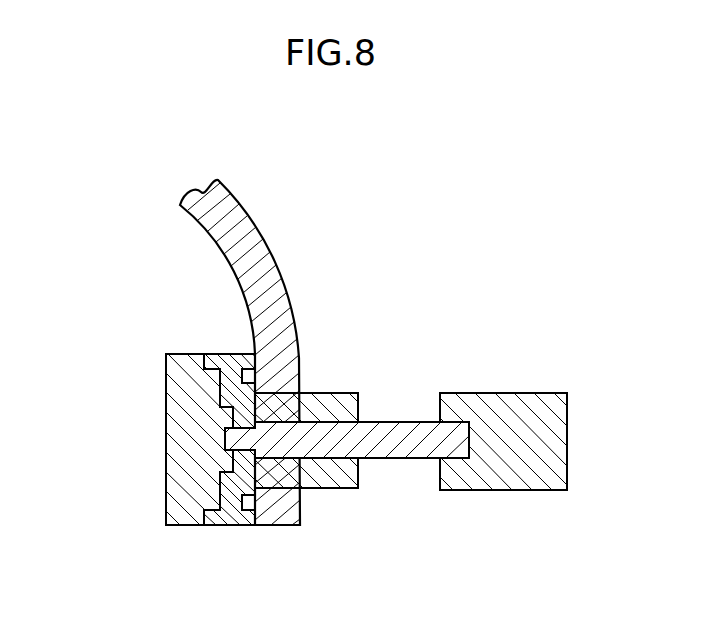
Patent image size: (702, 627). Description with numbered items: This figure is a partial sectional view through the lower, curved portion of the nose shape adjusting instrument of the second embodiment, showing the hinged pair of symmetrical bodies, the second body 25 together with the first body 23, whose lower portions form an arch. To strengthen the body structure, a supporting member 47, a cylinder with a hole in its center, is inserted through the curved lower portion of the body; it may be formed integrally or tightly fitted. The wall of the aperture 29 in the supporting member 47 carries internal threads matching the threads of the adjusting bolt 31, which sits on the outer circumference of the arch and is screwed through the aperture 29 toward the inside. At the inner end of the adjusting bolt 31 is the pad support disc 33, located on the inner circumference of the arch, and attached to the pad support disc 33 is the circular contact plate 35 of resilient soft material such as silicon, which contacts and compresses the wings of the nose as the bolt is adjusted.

The second body 25 is at (284, 338).
The first body 23 is at (245, 209).
The aperture 29 is at (347, 445).
The adjusting bolt 31 is at (408, 425).
The pad support disc 33 is at (230, 508).
The circular contact plate 35 is at (177, 440).
The supporting member 47 is at (352, 394).